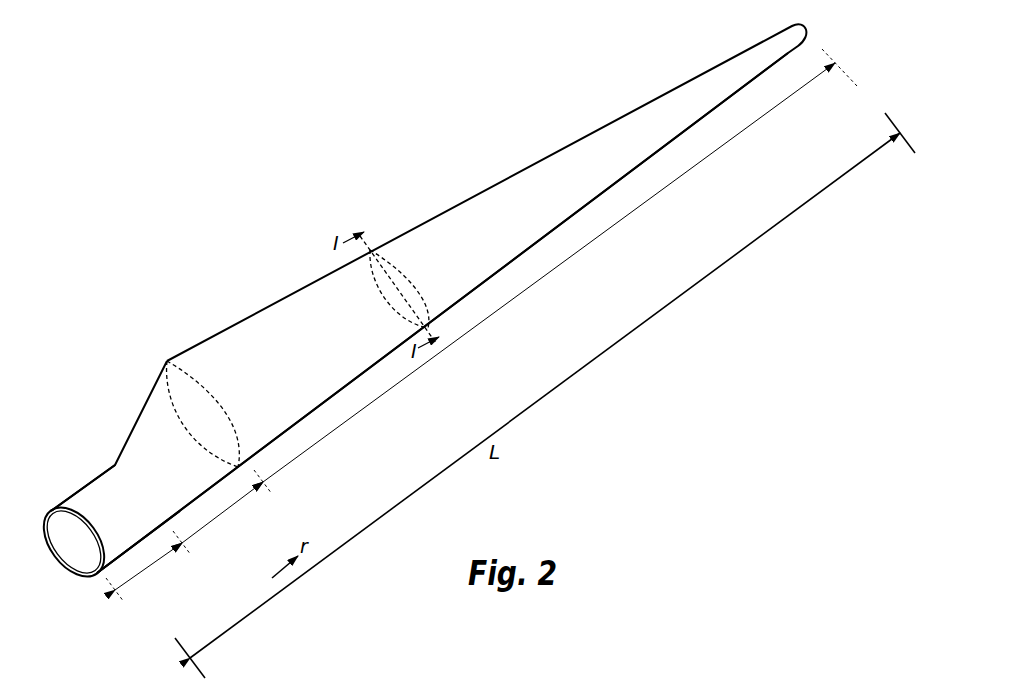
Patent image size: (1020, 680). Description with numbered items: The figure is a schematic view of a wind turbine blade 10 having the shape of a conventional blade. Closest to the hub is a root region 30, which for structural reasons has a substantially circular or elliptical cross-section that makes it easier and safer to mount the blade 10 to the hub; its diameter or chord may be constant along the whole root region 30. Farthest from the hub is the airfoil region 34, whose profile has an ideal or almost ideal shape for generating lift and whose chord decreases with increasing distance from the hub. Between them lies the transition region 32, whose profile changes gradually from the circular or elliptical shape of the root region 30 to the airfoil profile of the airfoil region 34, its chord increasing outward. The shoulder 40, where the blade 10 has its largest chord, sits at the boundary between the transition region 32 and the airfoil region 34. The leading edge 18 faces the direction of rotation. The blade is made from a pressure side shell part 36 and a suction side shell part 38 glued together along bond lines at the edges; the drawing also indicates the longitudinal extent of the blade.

The wind turbine blade 10 is at (289, 199).
The leading edge 18 is at (576, 221).
The root region 30 is at (150, 564).
The transition region 32 is at (225, 513).
The airfoil region 34 is at (491, 316).
The pressure side shell part 36 is at (67, 504).
The suction side shell part 38 is at (46, 517).
The shoulder 40 is at (167, 360).